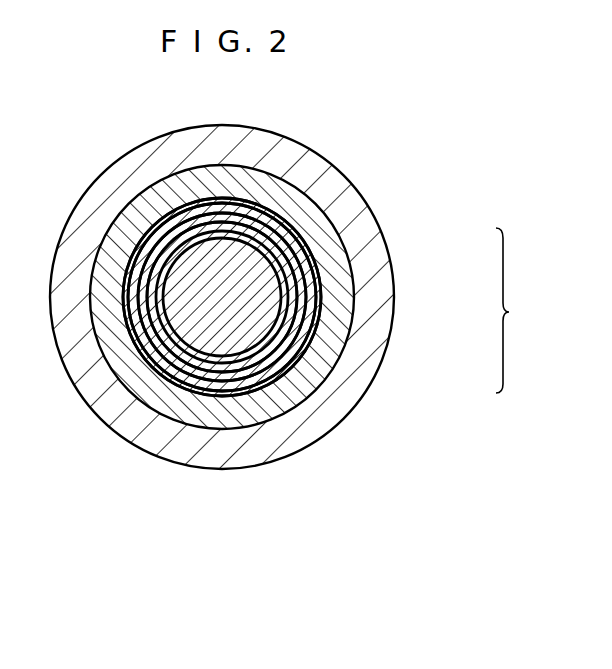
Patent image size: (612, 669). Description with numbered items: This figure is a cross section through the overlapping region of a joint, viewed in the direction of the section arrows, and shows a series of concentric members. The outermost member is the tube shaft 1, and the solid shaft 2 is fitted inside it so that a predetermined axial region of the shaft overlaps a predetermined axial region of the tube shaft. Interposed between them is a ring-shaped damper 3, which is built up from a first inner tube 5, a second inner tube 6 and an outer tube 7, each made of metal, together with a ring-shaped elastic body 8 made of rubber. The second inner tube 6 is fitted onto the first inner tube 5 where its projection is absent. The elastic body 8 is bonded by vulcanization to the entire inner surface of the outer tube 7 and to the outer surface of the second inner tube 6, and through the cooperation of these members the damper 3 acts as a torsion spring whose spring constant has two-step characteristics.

The tube shaft 1 is at (345, 402).
The solid shaft 2 is at (258, 263).
The damper 3 is at (517, 329).
The first inner tube 5 is at (317, 326).
The second inner tube 6 is at (304, 344).
The outer tube 7 is at (340, 277).
The elastic body 8 is at (322, 294).